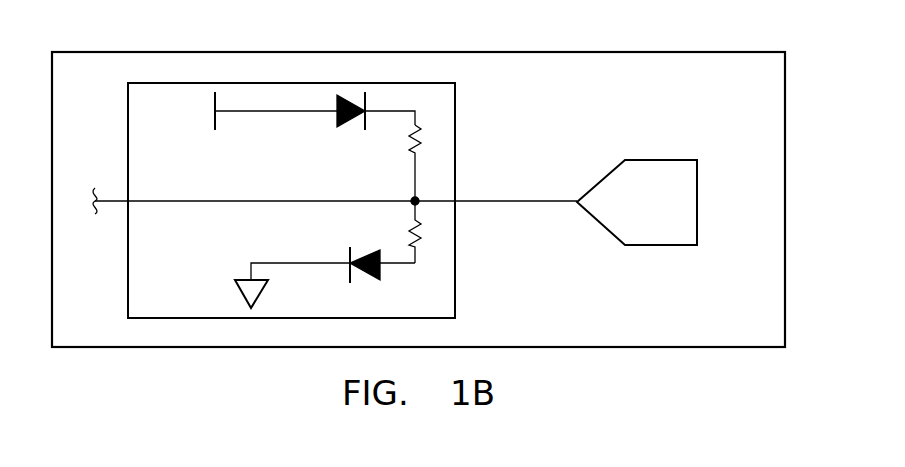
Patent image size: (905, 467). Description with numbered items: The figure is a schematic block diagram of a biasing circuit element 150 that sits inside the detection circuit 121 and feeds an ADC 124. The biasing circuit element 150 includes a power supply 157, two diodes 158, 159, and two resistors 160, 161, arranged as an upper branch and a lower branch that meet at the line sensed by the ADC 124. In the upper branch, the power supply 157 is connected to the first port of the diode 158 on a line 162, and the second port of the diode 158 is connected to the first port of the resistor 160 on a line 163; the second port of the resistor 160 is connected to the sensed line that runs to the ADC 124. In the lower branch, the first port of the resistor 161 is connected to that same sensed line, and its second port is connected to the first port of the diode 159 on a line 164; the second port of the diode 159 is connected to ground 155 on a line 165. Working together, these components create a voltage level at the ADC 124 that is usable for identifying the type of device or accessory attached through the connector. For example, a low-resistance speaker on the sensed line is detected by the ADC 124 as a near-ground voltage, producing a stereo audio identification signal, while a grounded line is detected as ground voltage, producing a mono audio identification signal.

The detection circuit 121 is at (429, 233).
The biasing circuit element 150 is at (436, 206).
The ADC 124 is at (633, 228).
The ground 155 is at (211, 295).
The power supply 157 is at (176, 122).
The diode 158 is at (326, 123).
The diode 159 is at (340, 245).
The resistor 160 is at (460, 161).
The resistor 161 is at (461, 232).
The line 162 is at (276, 144).
The line 163 is at (388, 144).
The line 164 is at (409, 289).
The line 165 is at (272, 246).